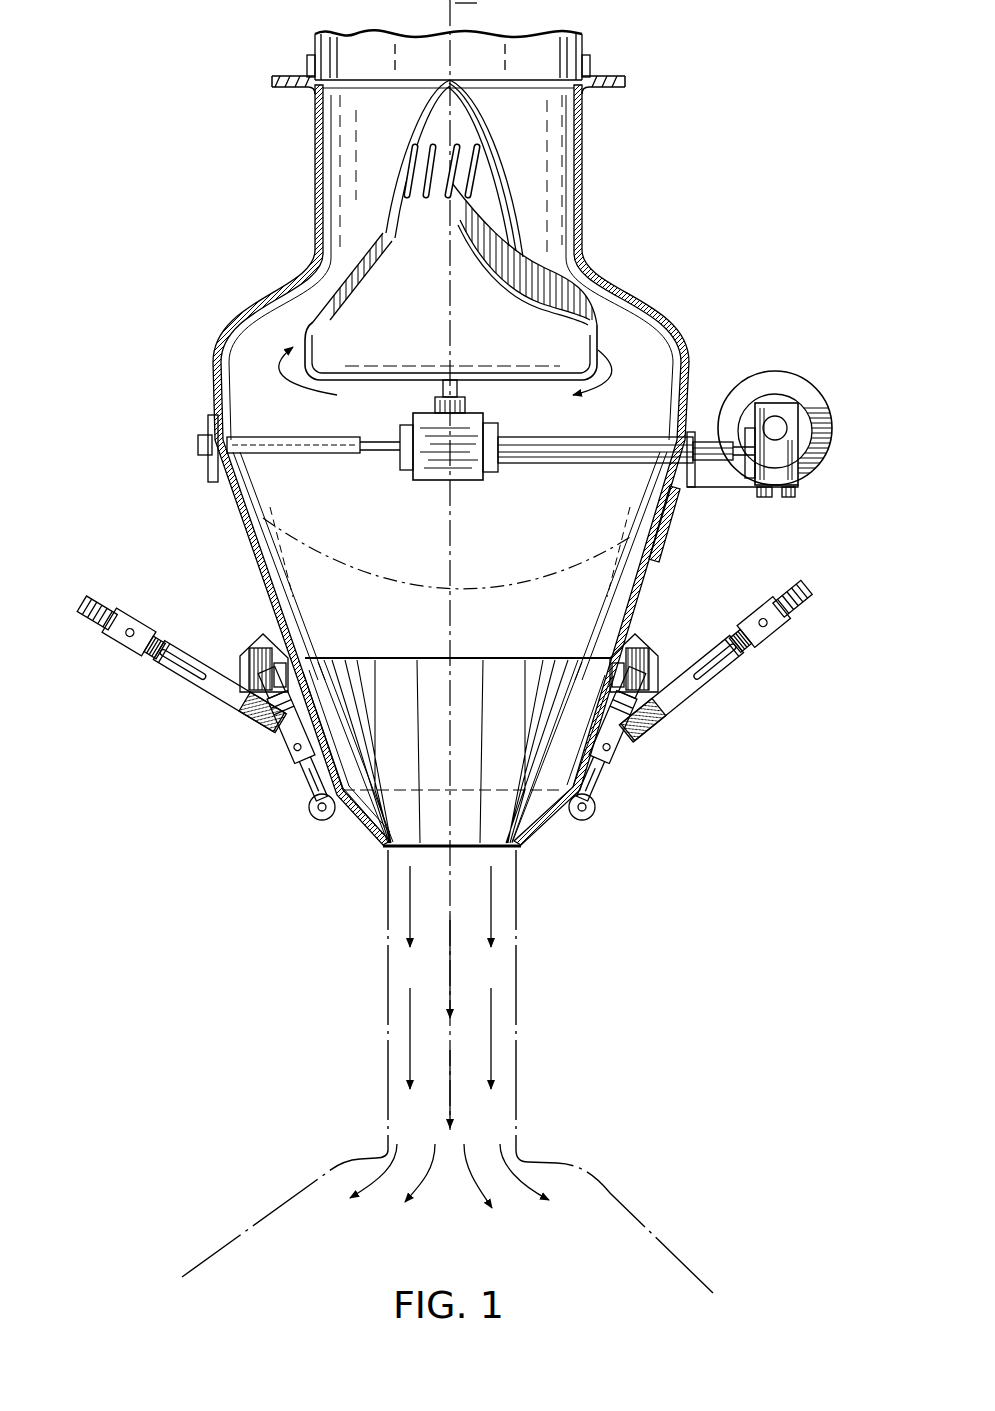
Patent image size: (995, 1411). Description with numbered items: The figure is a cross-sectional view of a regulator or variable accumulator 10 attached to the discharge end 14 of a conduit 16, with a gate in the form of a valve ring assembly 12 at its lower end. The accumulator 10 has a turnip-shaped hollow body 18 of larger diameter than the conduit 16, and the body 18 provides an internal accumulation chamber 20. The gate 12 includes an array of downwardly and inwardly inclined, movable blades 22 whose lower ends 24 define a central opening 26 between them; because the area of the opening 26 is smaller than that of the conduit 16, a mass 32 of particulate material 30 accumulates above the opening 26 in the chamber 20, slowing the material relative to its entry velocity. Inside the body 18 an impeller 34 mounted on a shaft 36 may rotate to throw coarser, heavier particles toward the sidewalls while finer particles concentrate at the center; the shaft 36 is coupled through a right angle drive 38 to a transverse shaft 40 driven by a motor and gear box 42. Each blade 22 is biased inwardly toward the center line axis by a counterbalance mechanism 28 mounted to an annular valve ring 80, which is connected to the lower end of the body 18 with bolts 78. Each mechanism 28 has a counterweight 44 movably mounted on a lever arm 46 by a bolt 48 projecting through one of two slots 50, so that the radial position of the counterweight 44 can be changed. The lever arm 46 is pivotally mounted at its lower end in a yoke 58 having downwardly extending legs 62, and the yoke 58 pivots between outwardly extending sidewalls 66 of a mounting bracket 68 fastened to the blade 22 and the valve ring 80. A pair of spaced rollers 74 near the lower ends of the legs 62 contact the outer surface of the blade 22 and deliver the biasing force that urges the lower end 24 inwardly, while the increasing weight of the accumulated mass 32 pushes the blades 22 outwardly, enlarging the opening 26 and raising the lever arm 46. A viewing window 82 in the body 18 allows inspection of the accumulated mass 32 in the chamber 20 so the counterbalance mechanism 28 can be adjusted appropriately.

The variable accumulator 10 is at (730, 198).
The valve ring assembly 12 is at (335, 833).
The discharge end 14 is at (537, 87).
The conduit 16 is at (585, 42).
The hollow body 18 is at (212, 374).
The chamber 20 is at (408, 545).
The blades 22 is at (325, 695).
The lower ends 24 is at (520, 848).
The central opening 26 is at (455, 855).
The counterbalance mechanism 28 is at (442, 650).
The particulate material 30 is at (530, 570).
The accumulated mass 32 is at (512, 643).
The impeller 34 is at (430, 318).
The shaft 36 is at (457, 394).
The right angle drive 38 is at (468, 481).
The transverse shaft 40 is at (598, 450).
The motor and gear box 42 is at (790, 378).
The counterweight 44 is at (120, 650).
The lever arm 46 is at (170, 650).
The bolt 48 is at (132, 624).
The slots 50 is at (170, 672).
The yoke 58 is at (290, 778).
The legs 62 is at (600, 796).
The sidewalls 66 is at (260, 734).
The mounting bracket 68 is at (326, 688).
The rollers 74 is at (309, 812).
The bolts 78 is at (630, 652).
The valve ring 80 is at (240, 668).
The viewing window 82 is at (662, 540).